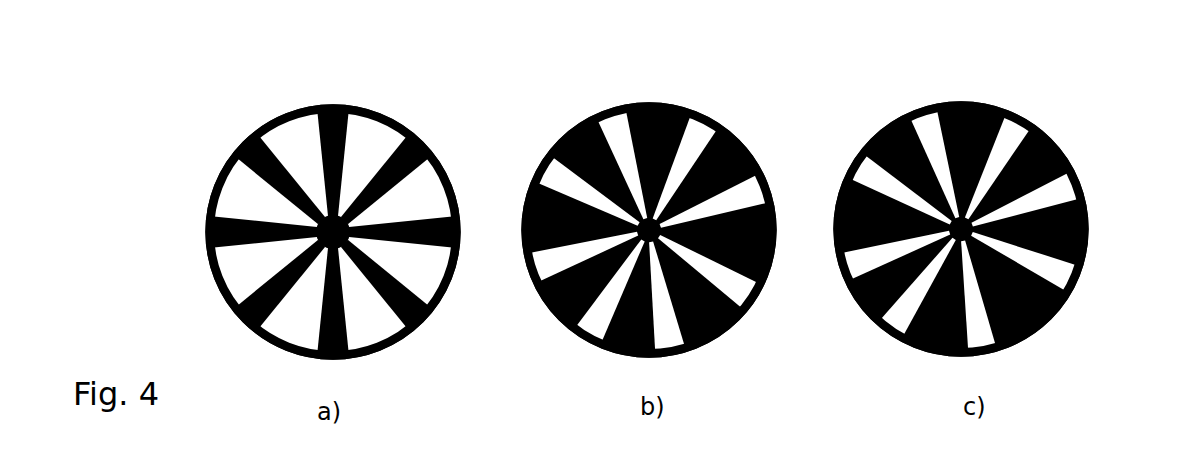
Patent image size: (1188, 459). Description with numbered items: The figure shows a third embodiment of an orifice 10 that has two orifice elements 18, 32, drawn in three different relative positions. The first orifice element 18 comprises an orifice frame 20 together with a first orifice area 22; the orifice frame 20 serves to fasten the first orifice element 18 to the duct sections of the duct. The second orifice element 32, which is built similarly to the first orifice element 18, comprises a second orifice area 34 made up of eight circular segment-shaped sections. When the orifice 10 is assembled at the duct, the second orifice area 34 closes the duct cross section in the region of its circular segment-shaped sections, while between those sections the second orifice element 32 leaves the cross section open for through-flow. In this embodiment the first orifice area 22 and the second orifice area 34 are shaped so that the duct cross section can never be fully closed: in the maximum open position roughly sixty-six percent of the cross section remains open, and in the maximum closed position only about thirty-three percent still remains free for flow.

The orifice 10 is at (440, 134).
The first orifice element 18 is at (456, 177).
The orifice frame 20 is at (385, 108).
The first orifice area 22 is at (630, 140).
The second orifice element 32 is at (410, 247).
The second orifice area 34 is at (392, 178).